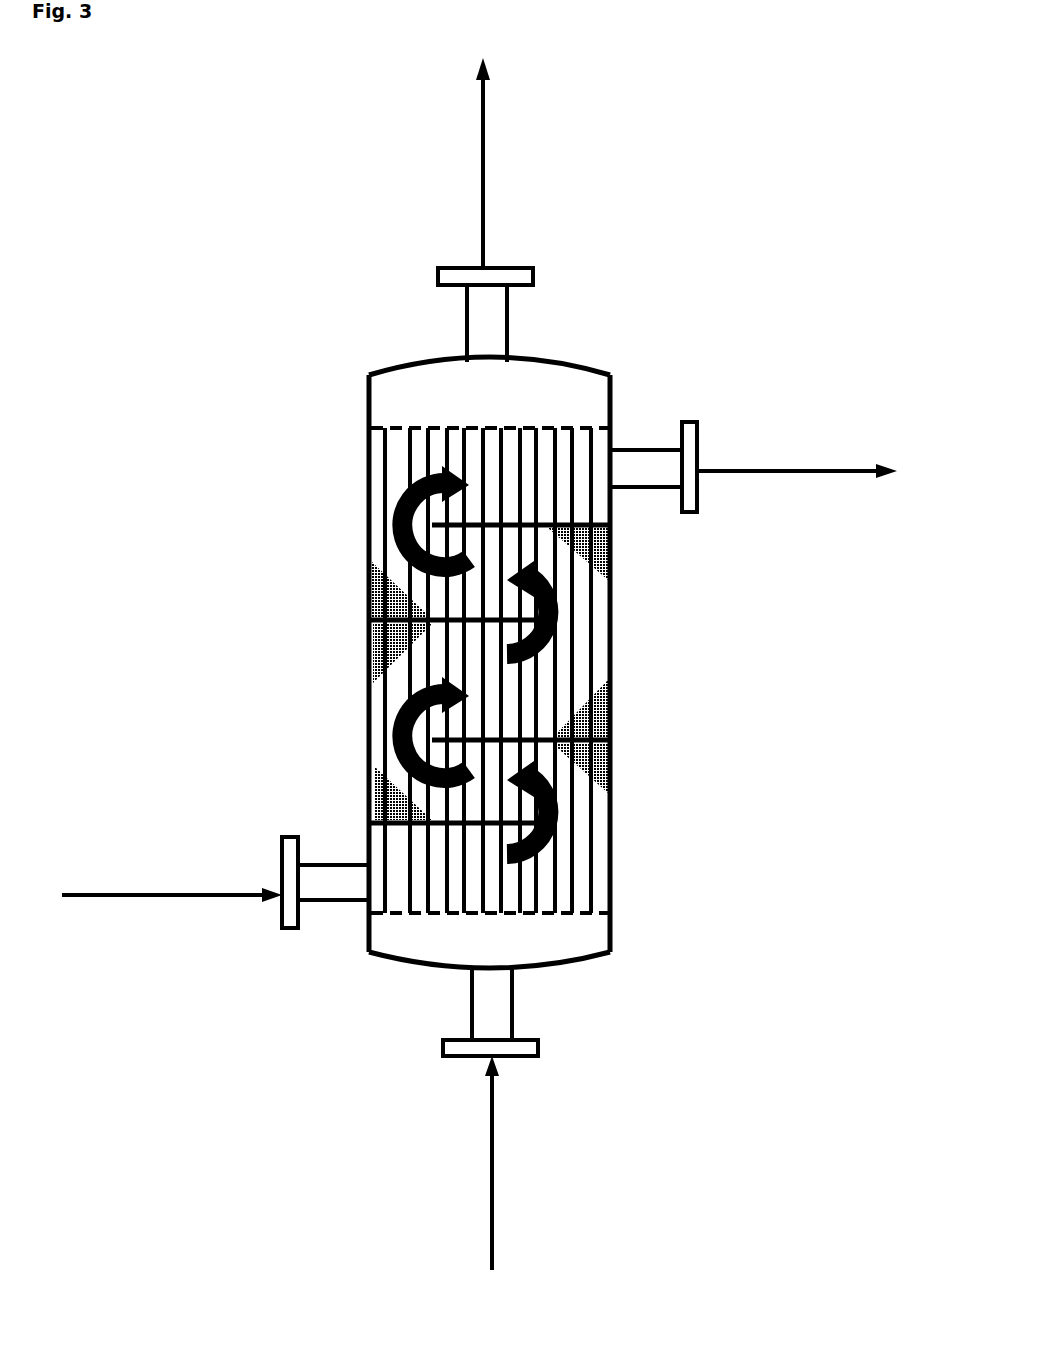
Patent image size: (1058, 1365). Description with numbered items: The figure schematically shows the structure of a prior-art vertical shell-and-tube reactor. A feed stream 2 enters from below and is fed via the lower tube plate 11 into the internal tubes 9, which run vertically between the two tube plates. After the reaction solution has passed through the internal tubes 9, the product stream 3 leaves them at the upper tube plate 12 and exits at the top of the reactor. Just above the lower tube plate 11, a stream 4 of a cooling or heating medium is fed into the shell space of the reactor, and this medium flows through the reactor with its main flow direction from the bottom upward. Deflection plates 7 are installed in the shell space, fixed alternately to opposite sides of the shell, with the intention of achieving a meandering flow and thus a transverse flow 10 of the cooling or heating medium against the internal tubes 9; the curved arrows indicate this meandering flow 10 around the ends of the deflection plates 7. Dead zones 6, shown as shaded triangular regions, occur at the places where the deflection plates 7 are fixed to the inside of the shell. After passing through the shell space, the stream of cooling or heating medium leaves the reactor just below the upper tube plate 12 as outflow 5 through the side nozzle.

The feed stream 2 is at (493, 1162).
The product stream 3 is at (487, 148).
The inflowing stream of cooling or heating medium 4 is at (132, 893).
The outflowing stream of cooling or heating medium 5 is at (807, 468).
The dead zones 6 is at (600, 710).
The deflection plates 7 is at (470, 825).
The internal tubes 9 is at (395, 892).
The meandering flow of the cooling or heating medium 10 is at (580, 638).
The lower tube plate 11 is at (407, 913).
The upper tube plate 12 is at (523, 420).